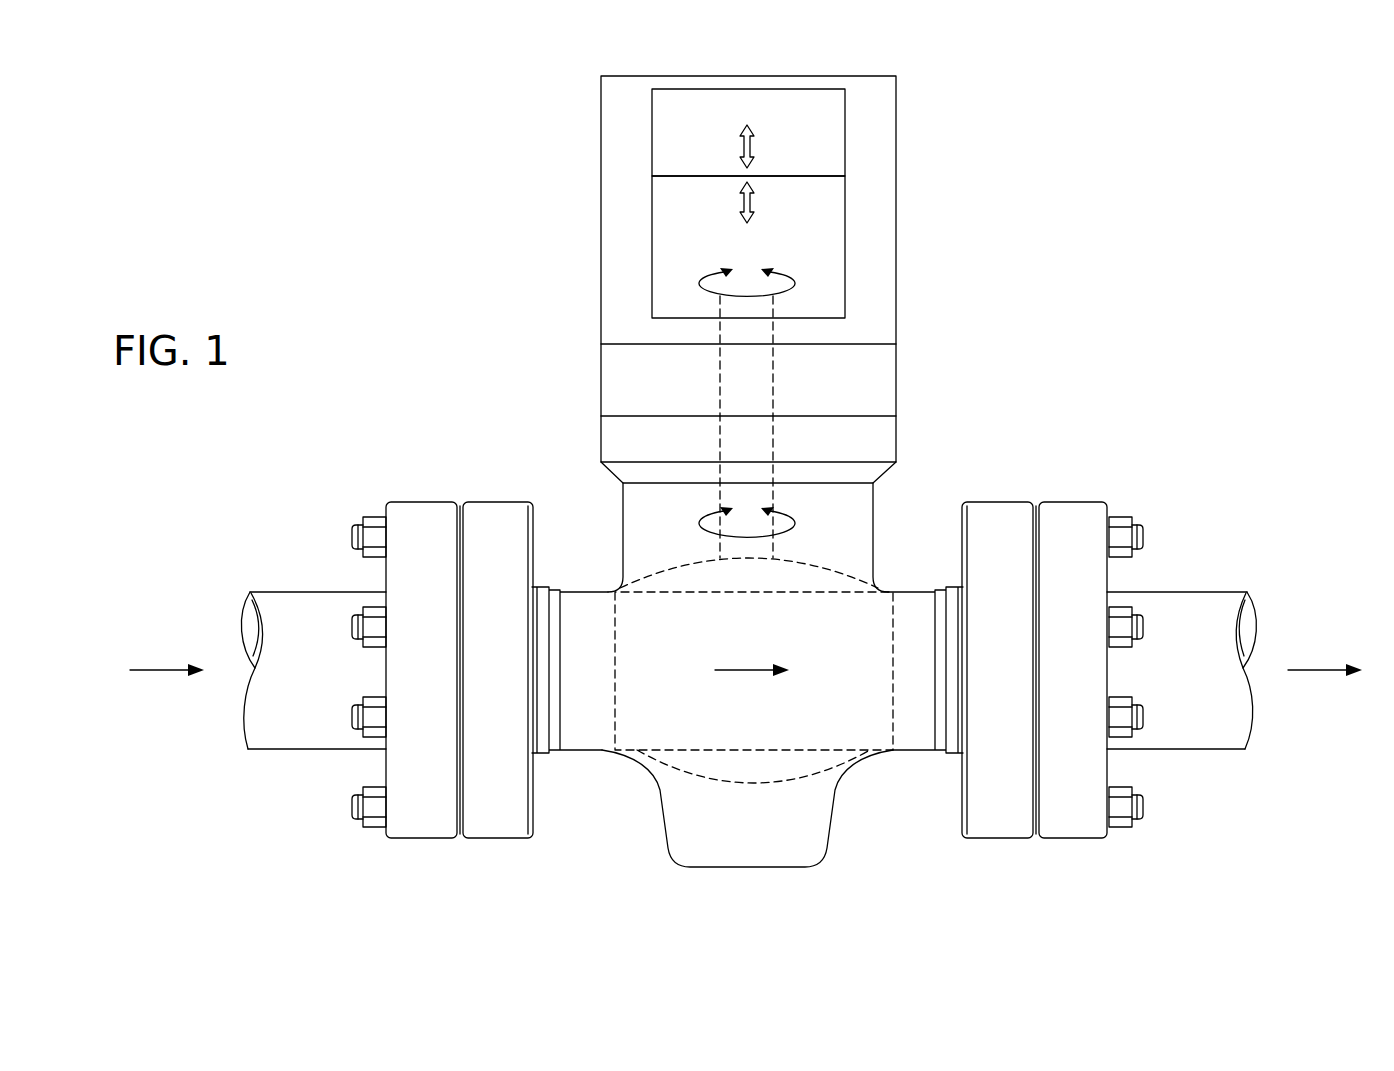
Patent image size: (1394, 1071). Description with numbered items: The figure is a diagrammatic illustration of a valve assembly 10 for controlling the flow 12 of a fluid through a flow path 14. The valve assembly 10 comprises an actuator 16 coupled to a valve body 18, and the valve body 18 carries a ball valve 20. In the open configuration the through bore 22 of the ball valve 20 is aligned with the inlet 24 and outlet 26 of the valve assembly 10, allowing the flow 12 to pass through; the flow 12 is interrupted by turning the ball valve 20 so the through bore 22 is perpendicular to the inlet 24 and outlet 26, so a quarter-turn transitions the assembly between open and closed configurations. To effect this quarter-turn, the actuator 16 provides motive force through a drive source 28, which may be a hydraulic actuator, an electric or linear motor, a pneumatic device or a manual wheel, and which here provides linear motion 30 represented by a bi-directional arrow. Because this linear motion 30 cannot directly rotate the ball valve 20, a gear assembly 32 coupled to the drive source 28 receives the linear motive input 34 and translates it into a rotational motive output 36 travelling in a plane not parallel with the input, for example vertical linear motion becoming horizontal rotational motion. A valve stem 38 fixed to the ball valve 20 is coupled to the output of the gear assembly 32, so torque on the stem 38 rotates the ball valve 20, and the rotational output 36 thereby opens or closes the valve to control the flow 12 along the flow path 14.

The valve assembly 10 is at (1102, 288).
The flow 12 is at (160, 672).
The flow path 14 is at (250, 628).
The actuator 16 is at (896, 232).
The valve body 18 is at (896, 378).
The ball valve 20 is at (690, 778).
The through bore 22 is at (840, 710).
The inlet 24 is at (496, 502).
The outlet 26 is at (1000, 502).
The drive source 28 is at (845, 131).
The linear motion 30 is at (745, 150).
The gear assembly 32 is at (845, 262).
The linear motive input 34 is at (745, 205).
The rotational motive output 36 is at (705, 285).
The valve stem 38 is at (720, 376).